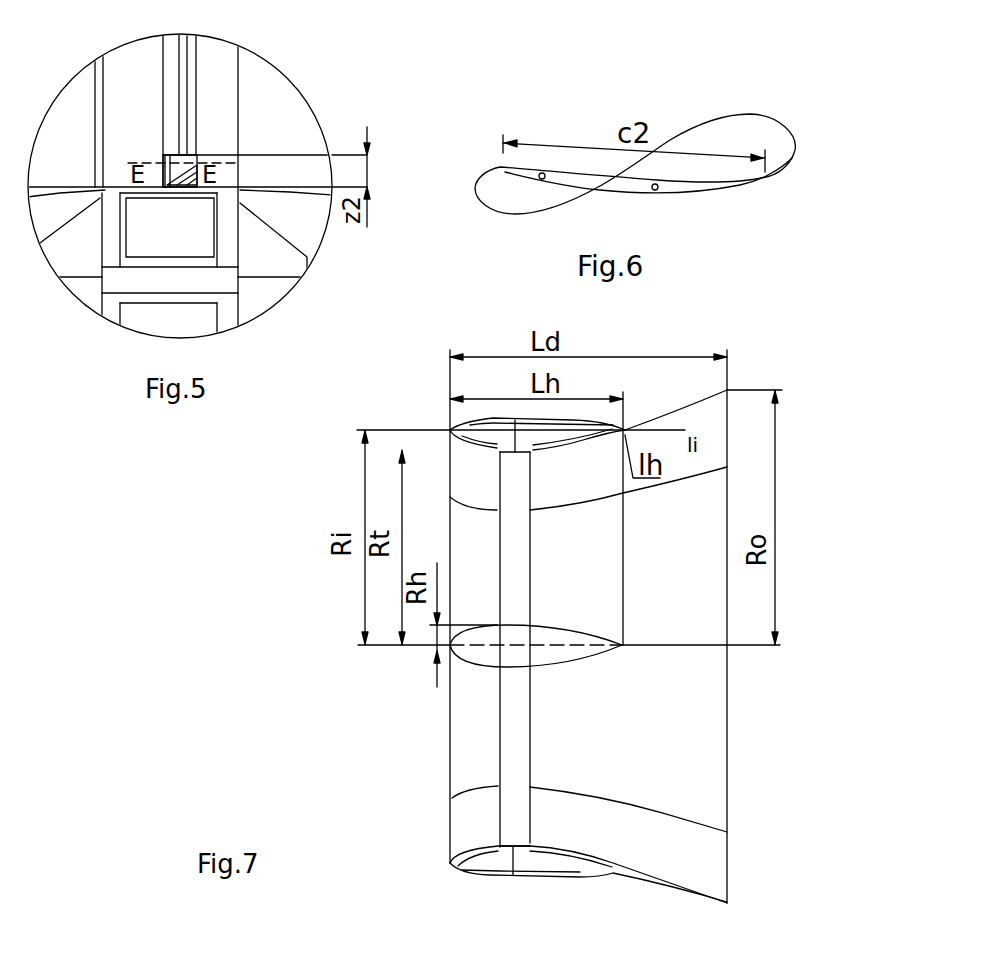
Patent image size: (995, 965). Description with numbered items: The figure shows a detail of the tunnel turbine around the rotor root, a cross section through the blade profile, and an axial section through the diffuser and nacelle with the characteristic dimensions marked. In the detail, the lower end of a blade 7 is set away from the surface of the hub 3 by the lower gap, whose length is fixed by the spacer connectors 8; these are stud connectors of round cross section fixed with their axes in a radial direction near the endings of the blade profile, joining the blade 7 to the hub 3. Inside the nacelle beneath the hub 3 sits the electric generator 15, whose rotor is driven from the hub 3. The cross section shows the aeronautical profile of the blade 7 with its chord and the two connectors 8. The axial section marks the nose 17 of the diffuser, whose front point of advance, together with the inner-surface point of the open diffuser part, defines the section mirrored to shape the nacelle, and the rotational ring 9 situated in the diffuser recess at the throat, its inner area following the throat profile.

In FIG. 5, the hub 3 is at (117, 183).
In FIG. 5, the blade 7 is at (183, 73).
In FIG. 6, the blade 7 is at (690, 143).
In FIG. 5, the spacer connector 8 is at (167, 185).
In FIG. 5, the electric generator 15 is at (183, 225).
In FIG. 7, the nose of the diffuser 17 is at (450, 430).
In FIG. 7, the rotational ring 9 is at (512, 723).